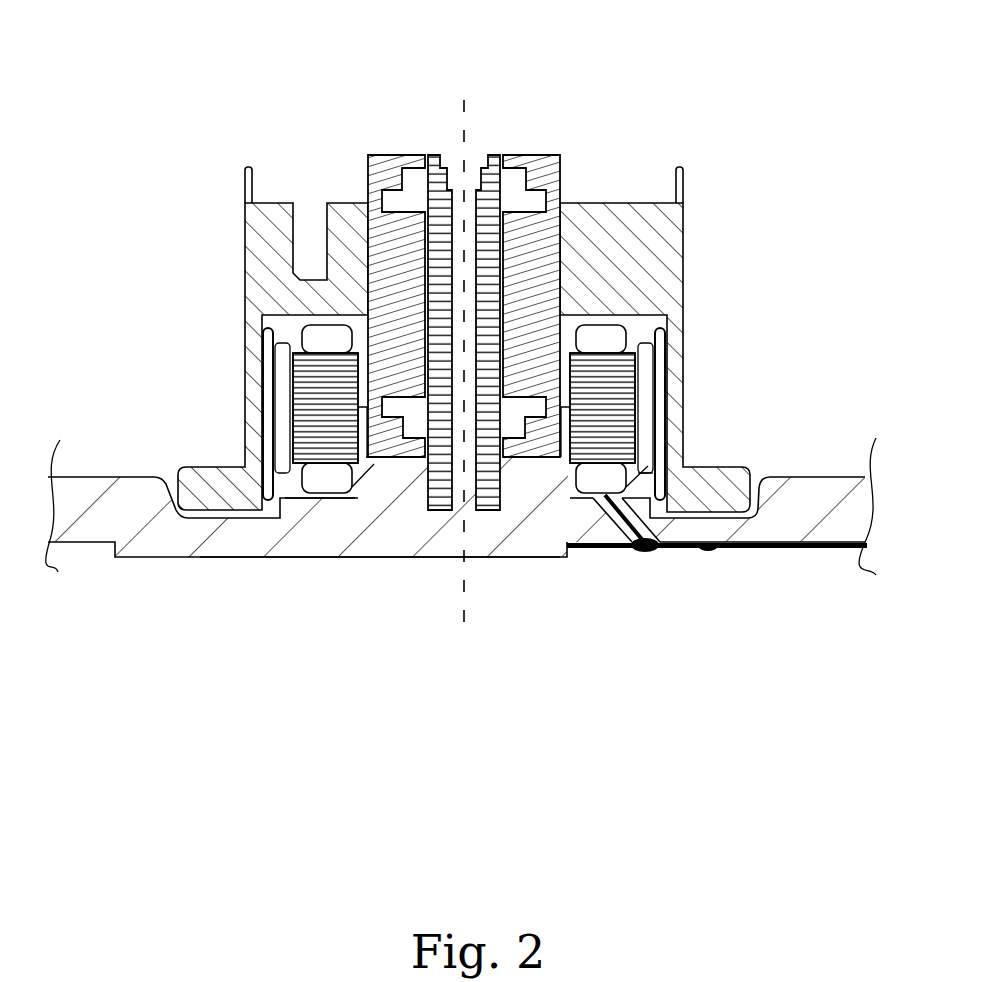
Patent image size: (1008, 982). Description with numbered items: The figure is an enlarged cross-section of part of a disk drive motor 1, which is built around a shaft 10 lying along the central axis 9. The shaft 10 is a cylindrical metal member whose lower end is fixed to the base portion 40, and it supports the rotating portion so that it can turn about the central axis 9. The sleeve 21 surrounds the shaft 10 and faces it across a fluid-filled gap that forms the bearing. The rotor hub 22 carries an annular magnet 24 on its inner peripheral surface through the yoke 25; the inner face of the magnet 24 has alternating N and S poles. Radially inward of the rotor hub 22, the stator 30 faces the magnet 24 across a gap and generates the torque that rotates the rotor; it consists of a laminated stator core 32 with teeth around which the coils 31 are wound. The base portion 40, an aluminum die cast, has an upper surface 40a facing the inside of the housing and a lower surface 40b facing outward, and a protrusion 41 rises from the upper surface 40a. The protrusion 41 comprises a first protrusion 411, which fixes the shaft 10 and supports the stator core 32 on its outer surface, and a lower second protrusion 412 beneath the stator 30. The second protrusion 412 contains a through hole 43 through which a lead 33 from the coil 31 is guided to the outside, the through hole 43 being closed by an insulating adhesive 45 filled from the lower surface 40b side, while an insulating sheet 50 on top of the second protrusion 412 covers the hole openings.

The motor 1 is at (650, 80).
The central axis 9 is at (466, 137).
The shaft 10 is at (436, 154).
The sleeve 21 is at (372, 155).
The rotor hub 22 is at (253, 226).
The magnet 24 is at (280, 424).
The yoke 25 is at (266, 365).
The stator 30 is at (293, 490).
The coil 31 is at (325, 340).
The stator core 32 is at (253, 284).
The lead 33 is at (741, 550).
The base portion 40 is at (187, 537).
The upper surface 40a is at (708, 513).
The lower surface 40b is at (405, 558).
The protrusion 41 is at (382, 612).
The first protrusion 411 is at (380, 472).
The second protrusion 412 is at (305, 503).
The through hole 43 is at (604, 551).
The adhesive 45 is at (646, 551).
The insulating sheet 50 is at (638, 478).